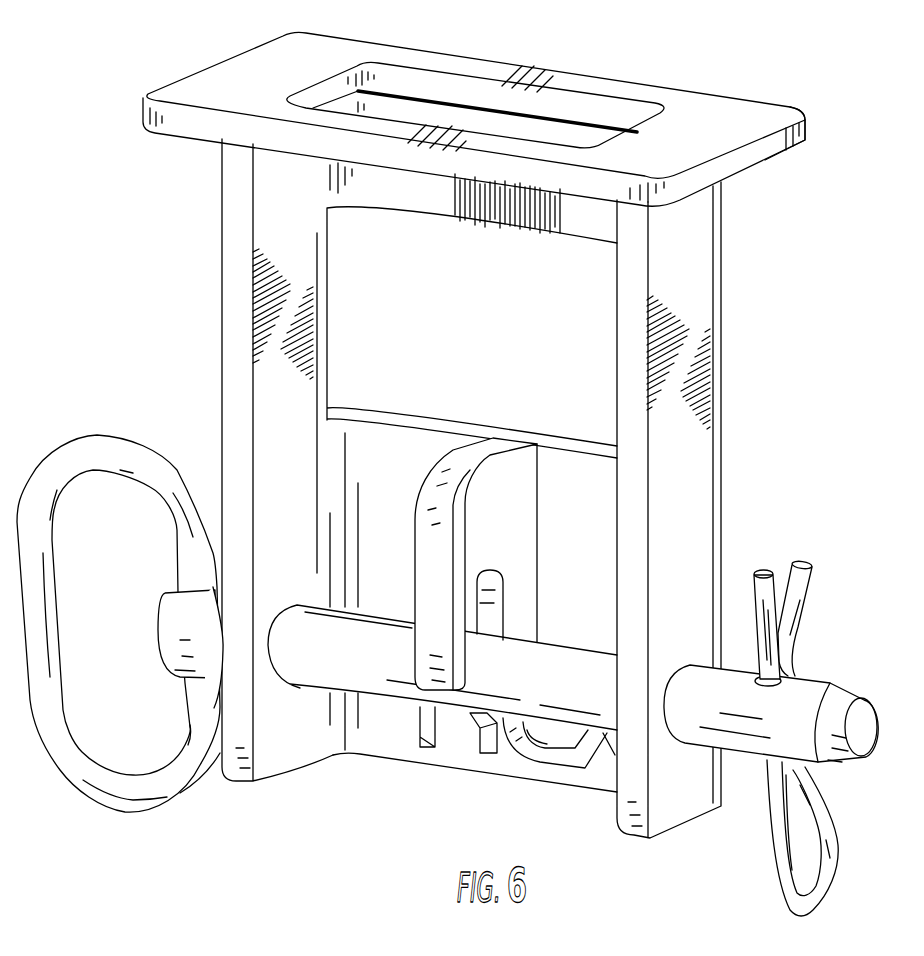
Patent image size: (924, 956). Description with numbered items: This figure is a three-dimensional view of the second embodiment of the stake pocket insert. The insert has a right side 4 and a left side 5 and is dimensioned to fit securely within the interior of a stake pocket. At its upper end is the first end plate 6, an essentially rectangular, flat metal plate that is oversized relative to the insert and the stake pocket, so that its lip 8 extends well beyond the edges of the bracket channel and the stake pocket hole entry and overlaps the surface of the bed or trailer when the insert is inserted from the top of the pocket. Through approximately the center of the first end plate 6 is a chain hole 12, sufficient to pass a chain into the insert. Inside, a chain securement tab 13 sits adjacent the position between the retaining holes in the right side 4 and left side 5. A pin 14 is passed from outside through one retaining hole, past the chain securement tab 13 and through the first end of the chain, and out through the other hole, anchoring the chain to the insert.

The right side 4 is at (703, 288).
The left side 5 is at (220, 297).
The first end plate 6 is at (690, 105).
The lip 8 is at (797, 110).
The chain hole 12 is at (462, 103).
The chain securement tab 13 is at (430, 647).
The pin 14 is at (818, 680).